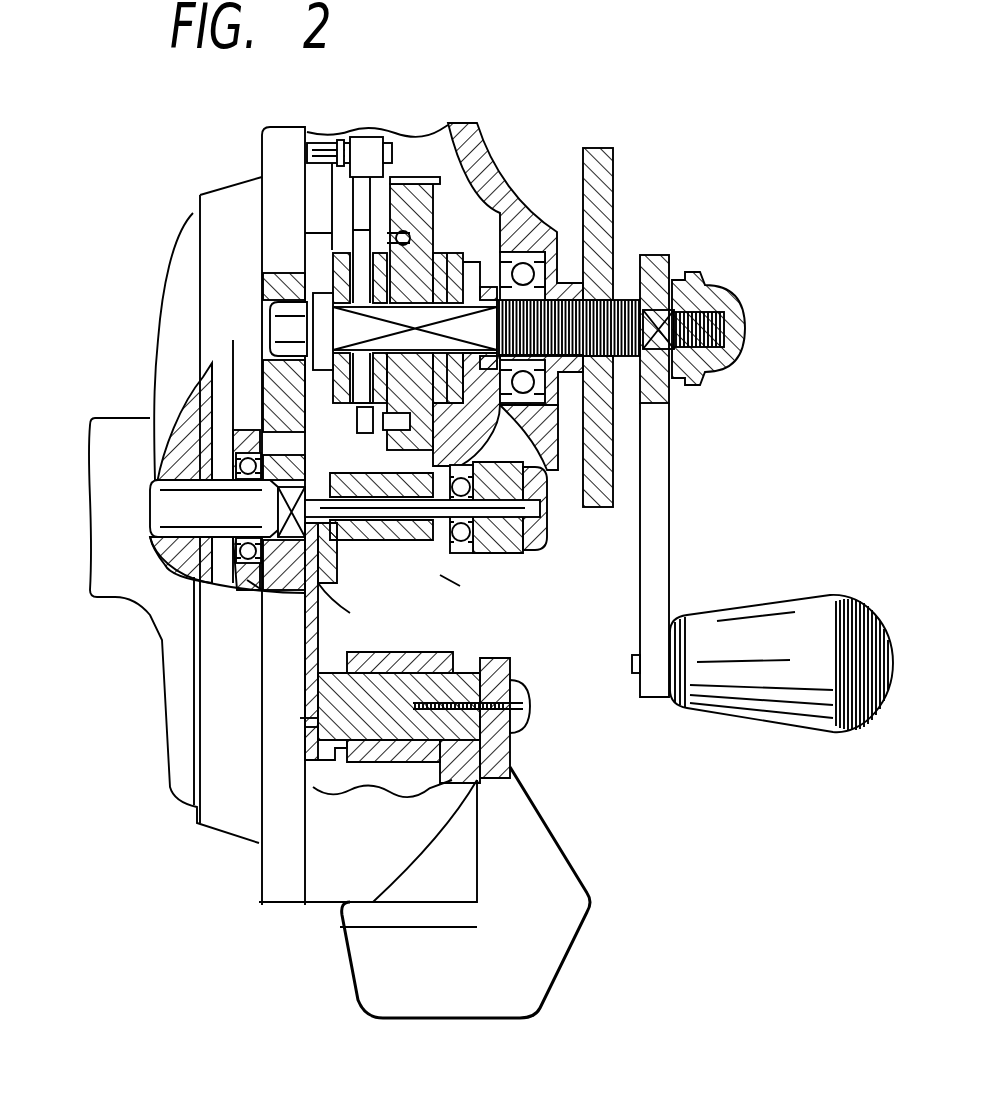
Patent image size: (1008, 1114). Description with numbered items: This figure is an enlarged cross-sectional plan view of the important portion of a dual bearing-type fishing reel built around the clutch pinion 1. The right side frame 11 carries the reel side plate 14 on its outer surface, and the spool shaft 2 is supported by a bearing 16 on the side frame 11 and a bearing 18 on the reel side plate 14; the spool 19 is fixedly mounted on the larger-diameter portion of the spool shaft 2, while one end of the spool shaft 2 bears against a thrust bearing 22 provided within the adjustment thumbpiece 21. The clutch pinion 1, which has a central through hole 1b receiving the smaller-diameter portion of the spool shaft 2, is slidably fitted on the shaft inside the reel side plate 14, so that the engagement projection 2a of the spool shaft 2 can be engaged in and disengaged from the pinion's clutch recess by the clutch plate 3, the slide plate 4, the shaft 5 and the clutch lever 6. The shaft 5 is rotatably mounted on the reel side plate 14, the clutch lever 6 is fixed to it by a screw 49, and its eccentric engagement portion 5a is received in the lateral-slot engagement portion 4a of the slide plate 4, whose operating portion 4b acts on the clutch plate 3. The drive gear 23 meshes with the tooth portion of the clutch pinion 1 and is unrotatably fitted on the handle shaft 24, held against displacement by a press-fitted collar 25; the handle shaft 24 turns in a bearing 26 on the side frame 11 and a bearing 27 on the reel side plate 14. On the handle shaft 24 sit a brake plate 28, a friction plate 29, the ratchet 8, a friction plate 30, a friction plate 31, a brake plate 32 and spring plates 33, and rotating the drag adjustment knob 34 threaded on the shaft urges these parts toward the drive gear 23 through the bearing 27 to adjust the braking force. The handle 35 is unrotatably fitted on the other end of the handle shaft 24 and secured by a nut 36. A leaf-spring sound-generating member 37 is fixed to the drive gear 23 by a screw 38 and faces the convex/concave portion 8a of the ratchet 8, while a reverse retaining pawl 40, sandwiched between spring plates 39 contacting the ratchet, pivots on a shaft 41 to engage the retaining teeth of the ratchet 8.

The clutch pinion 1 is at (453, 593).
The through hole 1b is at (447, 580).
The spool shaft 2 is at (172, 572).
The engagement projection 2a is at (258, 587).
The clutch plate 3 is at (340, 560).
The slide plate 4 is at (288, 756).
The engagement portion 4a is at (307, 727).
The operating portion 4b is at (337, 606).
The shaft 5 is at (333, 768).
The eccentric engagement portion 5a is at (300, 722).
The clutch lever 6 is at (593, 902).
The ratchet 8 is at (155, 417).
The sound-generating convex/concave portion 8a is at (285, 460).
The right side frame 11 is at (279, 163).
The reel side plate 14 is at (500, 218).
The bearing 16 is at (250, 563).
The bearing 18 is at (483, 557).
The spool 19 is at (187, 800).
The adjustment thumbpiece 21 is at (540, 543).
The thrust bearing 22 is at (547, 520).
The drive gear 23 is at (358, 441).
The handle shaft 24 is at (270, 320).
The collar 25 is at (360, 452).
The bearing 26 is at (313, 296).
The bearing 27 is at (533, 262).
The brake plate 28 is at (333, 270).
The friction plate 29 is at (380, 250).
The friction plate 30 is at (425, 262).
The friction plate 31 is at (440, 258).
The brake plate 32 is at (470, 285).
The spring plates 33 is at (476, 288).
The drag adjustment knob 34 is at (608, 160).
The handle 35 is at (669, 560).
The nut 36 is at (746, 318).
The sound-generating member 37 is at (333, 452).
The screw 38 is at (387, 235).
The spring plates 39 is at (338, 140).
The reverse retaining pawl 40 is at (368, 140).
The shaft 41 is at (318, 137).
The screw 49 is at (531, 722).